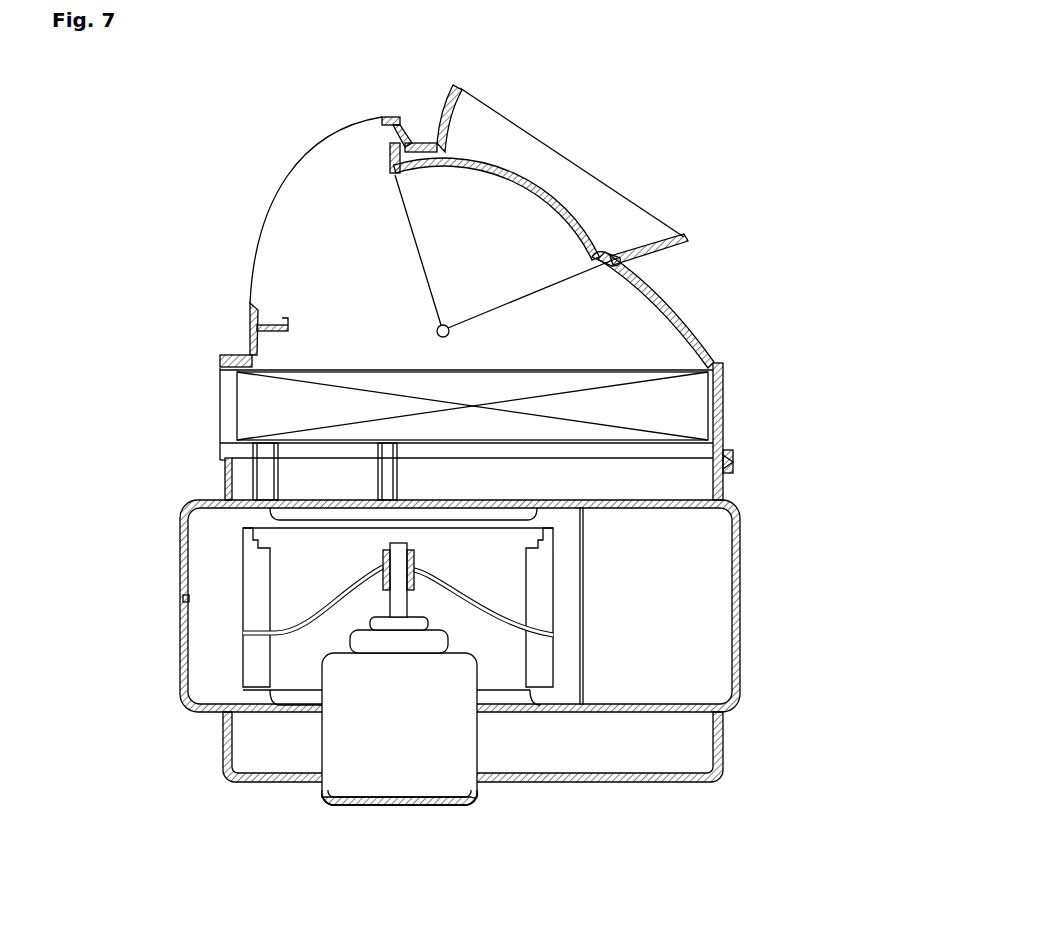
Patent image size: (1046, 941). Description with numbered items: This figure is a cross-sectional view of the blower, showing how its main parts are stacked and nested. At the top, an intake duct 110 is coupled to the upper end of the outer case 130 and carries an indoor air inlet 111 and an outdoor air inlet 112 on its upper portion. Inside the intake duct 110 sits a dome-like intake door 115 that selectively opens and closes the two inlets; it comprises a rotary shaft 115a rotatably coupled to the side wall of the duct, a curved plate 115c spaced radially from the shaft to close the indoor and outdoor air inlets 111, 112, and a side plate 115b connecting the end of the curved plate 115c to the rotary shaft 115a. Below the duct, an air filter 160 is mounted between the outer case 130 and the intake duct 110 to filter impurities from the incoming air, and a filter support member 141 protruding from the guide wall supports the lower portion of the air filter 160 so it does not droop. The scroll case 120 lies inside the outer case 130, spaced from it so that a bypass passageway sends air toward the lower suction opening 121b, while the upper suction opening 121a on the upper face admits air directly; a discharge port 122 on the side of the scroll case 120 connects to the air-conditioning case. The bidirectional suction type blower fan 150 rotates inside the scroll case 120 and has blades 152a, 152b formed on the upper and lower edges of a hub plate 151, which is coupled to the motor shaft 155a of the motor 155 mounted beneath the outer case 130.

The intake duct 110 is at (535, 308).
The indoor air inlet 111 is at (285, 194).
The outdoor air inlet 112 is at (547, 175).
The intake door 115 is at (398, 262).
The rotary shaft 115a is at (436, 333).
The side plate 115b is at (545, 296).
The curved plate 115c is at (574, 213).
The scroll case 120 is at (528, 606).
The upper suction opening 121a is at (328, 512).
The lower suction opening 121b is at (278, 707).
The discharge port 122 is at (690, 635).
The outer case 130 is at (722, 745).
The filter support member 141 is at (388, 448).
The bidirectional suction type blower fan 150 is at (317, 607).
The hub plate 151 is at (313, 613).
The blade 152a is at (253, 558).
The blade 152b is at (253, 655).
The motor 155 is at (400, 694).
The motor shaft 155a is at (400, 602).
The air filter 160 is at (272, 390).